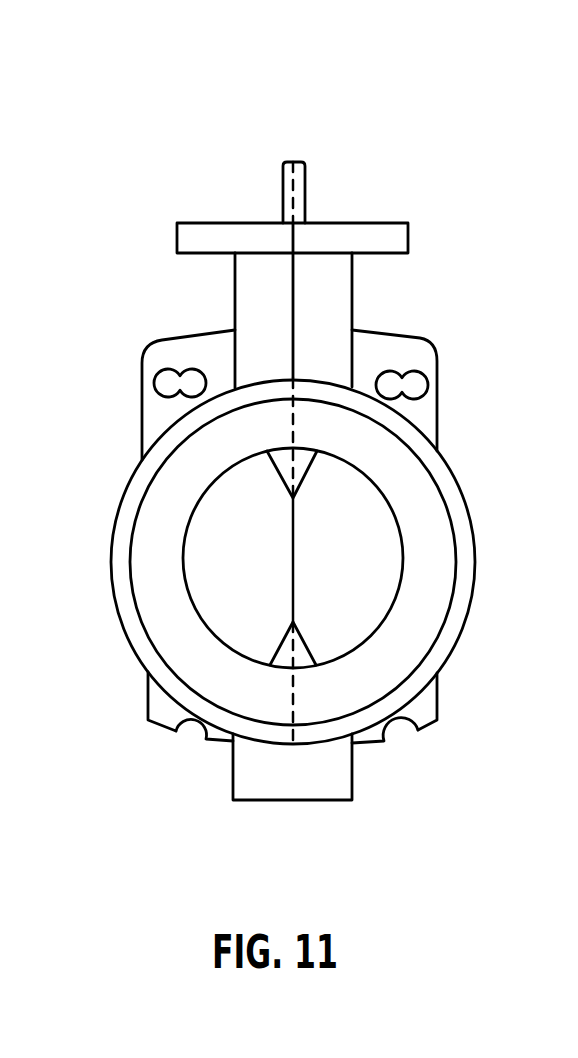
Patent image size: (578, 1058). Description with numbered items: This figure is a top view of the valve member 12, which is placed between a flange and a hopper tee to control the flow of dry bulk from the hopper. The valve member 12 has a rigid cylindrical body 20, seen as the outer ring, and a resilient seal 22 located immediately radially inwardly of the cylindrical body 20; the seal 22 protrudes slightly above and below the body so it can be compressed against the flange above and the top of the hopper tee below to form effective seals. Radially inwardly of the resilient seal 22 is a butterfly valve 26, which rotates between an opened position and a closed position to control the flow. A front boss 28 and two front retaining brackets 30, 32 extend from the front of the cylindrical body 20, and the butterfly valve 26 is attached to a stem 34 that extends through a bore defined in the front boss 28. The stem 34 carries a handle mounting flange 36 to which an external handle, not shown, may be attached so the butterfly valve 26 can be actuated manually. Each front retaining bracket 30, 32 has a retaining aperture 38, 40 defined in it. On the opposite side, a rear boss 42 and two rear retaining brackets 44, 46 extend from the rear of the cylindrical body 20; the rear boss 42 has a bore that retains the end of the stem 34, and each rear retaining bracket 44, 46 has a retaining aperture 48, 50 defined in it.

The valve member 12 is at (293, 153).
The rigid cylindrical body 20 is at (471, 510).
The resilient seal 22 is at (420, 500).
The butterfly valve 26 is at (366, 596).
The front boss 28 is at (352, 292).
The front retaining bracket 30 is at (150, 346).
The front retaining bracket 32 is at (428, 345).
The stem 34 is at (305, 191).
The handle mounting flange 36 is at (408, 228).
The retaining aperture 38 is at (162, 383).
The retaining aperture 40 is at (412, 385).
The rear boss 42 is at (352, 778).
The rear retaining bracket 44 is at (155, 700).
The rear retaining bracket 46 is at (423, 708).
The retaining aperture 48 is at (193, 725).
The retaining aperture 50 is at (395, 722).